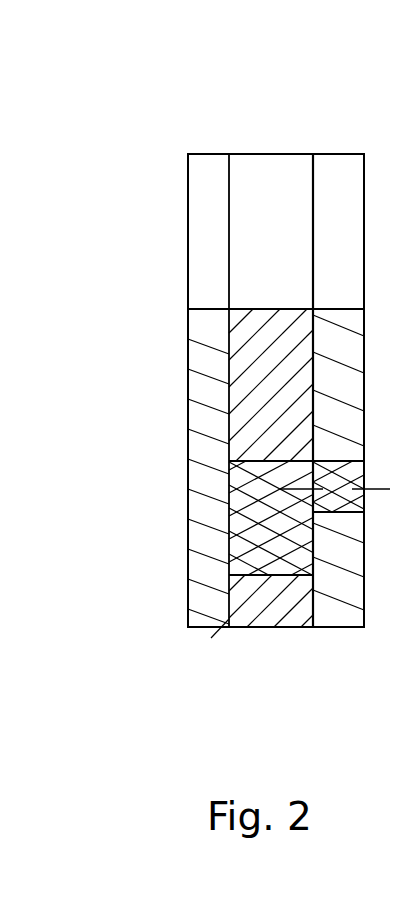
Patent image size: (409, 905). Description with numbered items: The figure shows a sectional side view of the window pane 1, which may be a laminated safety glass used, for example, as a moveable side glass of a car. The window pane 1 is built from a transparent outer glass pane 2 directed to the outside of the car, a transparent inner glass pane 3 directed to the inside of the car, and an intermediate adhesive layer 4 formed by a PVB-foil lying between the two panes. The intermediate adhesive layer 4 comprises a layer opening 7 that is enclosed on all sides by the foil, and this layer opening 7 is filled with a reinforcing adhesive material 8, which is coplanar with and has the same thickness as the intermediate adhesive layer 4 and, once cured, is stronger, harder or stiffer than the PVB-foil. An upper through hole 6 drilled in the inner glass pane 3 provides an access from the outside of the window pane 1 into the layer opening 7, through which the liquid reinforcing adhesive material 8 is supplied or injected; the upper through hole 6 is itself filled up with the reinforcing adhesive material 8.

The window pane 1 is at (276, 150).
The outer glass pane 2 is at (188, 198).
The inner glass pane 3 is at (338, 618).
The intermediate adhesive layer 4 is at (247, 270).
The upper through hole 6 is at (348, 468).
The layer opening 7 is at (255, 515).
The reinforcing adhesive material 8 is at (245, 492).